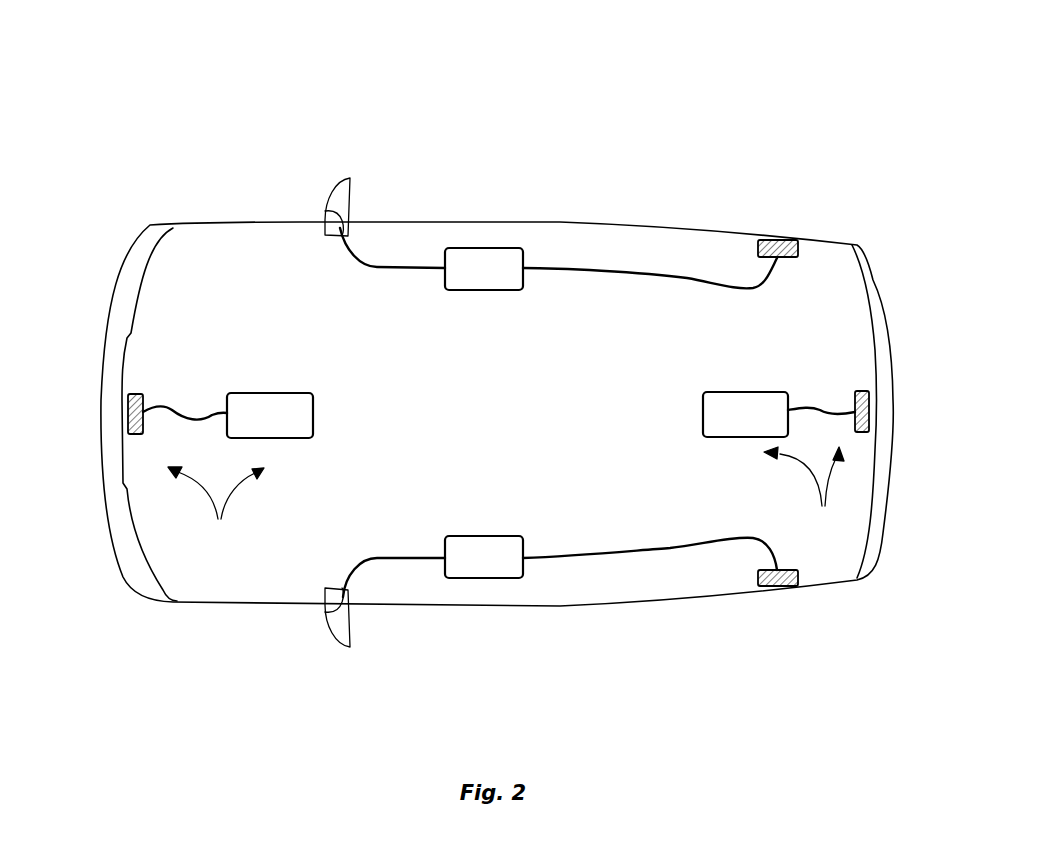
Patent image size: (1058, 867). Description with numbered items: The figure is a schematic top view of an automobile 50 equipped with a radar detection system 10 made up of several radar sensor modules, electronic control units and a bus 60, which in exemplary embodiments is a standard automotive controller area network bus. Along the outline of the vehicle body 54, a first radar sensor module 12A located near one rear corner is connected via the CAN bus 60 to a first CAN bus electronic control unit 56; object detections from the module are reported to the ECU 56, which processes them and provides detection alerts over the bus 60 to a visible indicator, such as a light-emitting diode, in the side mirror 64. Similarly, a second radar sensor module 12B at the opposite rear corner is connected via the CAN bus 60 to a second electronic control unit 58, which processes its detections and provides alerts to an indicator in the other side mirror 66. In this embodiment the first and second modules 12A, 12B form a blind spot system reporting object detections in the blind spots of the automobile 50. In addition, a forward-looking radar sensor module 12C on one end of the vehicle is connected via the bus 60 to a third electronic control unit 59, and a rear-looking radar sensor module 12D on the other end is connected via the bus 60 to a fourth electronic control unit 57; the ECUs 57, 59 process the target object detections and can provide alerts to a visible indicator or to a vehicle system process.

The detection system 10 is at (506, 500).
The first radar sensor module 12A is at (778, 590).
The second radar sensor module 12B is at (778, 240).
The forward-looking radar sensor module 12C is at (125, 412).
The rear-looking radar sensor module 12D is at (872, 420).
The automobile 50 is at (233, 119).
The vehicle body 54 is at (882, 328).
The first CAN bus electronic control unit 56 is at (497, 568).
The fourth CAN bus electronic control unit 57 is at (742, 410).
The second CAN bus electronic control unit 58 is at (480, 258).
The third CAN bus electronic control unit 59 is at (257, 405).
The CAN bus 60 is at (403, 270).
The side mirror 64 is at (334, 640).
The side mirror 66 is at (352, 190).